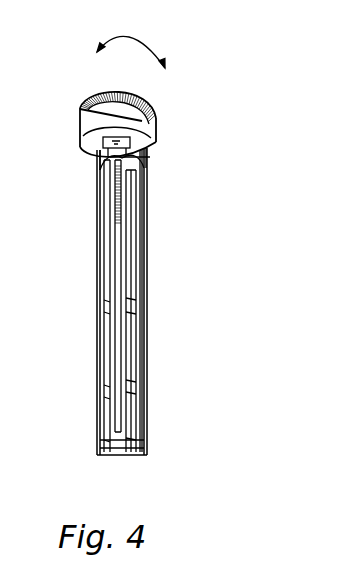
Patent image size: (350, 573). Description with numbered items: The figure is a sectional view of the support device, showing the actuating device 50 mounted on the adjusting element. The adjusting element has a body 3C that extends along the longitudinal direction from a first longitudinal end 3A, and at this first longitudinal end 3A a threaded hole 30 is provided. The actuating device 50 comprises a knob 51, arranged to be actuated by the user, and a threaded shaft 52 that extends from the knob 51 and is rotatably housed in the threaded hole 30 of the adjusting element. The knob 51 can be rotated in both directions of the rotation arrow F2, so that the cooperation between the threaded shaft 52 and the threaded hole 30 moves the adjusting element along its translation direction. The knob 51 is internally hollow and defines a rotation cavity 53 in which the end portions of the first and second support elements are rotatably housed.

The actuating device 50 is at (84, 78).
The knob 51 is at (157, 118).
The rotation cavity 53 is at (82, 165).
The threaded hole 30 is at (98, 200).
The first longitudinal end 3A is at (158, 178).
The body 3C is at (142, 450).
The threaded shaft 52 is at (140, 208).
The rotation arrow F2 is at (138, 34).